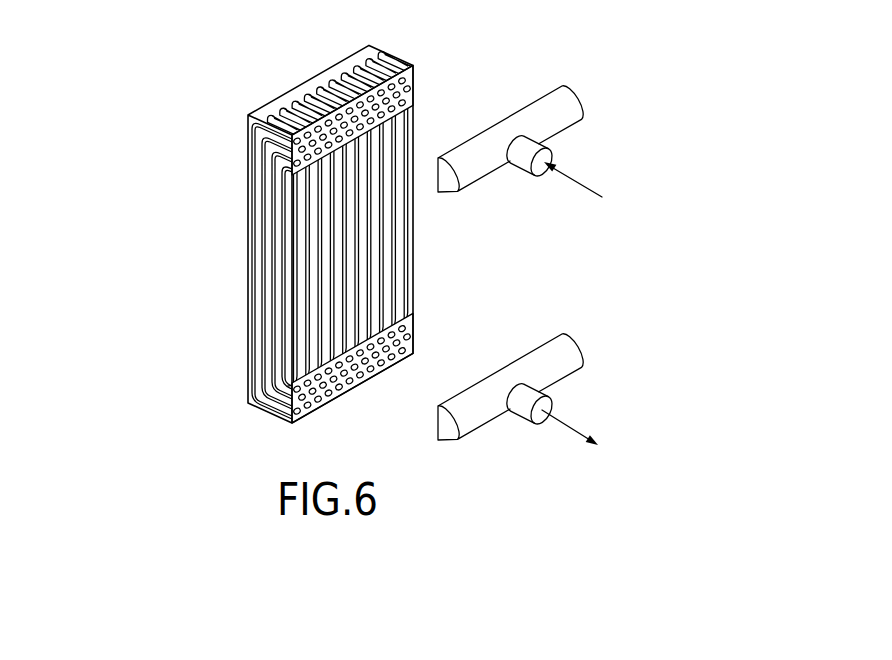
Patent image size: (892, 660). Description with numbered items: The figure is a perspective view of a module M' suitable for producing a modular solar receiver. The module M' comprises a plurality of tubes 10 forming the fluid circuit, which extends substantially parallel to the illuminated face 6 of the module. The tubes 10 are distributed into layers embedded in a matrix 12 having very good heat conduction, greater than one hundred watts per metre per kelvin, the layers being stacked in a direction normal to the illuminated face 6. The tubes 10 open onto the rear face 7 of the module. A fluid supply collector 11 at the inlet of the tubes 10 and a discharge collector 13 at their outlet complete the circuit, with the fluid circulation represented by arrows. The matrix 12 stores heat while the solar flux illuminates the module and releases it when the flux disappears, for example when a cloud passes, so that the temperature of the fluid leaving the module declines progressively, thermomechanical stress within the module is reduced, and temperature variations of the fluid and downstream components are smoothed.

The module M' is at (403, 268).
The illuminated face 6 is at (293, 85).
The rear face 7 is at (403, 215).
The tube 10 is at (377, 262).
The matrix 12 is at (352, 58).
The fluid supply collector 11 is at (590, 108).
The discharge collector 13 is at (465, 447).